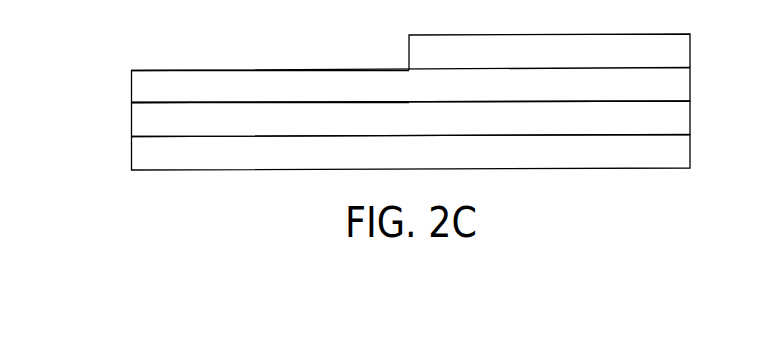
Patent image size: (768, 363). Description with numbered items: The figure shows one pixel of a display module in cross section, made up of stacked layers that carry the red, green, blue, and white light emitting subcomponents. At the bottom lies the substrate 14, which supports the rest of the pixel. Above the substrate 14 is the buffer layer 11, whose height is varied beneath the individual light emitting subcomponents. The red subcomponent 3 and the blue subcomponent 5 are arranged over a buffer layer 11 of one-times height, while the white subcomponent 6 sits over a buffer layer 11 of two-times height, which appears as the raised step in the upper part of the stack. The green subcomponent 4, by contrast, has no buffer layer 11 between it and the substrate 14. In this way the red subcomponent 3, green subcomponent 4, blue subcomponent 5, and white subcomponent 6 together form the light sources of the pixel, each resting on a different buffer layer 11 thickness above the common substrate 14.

The red subcomponent light source 3 is at (137, 87).
The green subcomponent light source 4 is at (137, 120).
The substrate 14 is at (137, 156).
The white subcomponent light source 6 is at (684, 51).
The buffer layer 11 is at (684, 84).
The blue subcomponent light source 5 is at (684, 119).